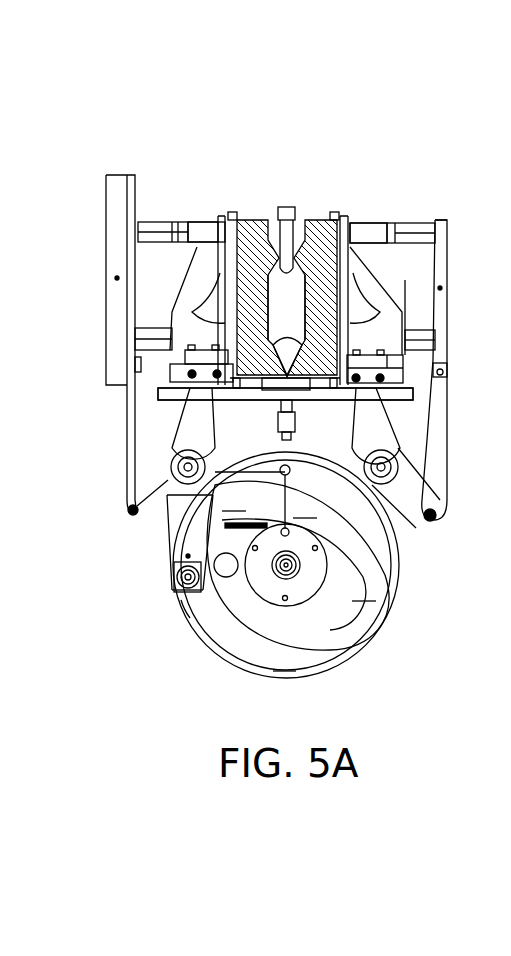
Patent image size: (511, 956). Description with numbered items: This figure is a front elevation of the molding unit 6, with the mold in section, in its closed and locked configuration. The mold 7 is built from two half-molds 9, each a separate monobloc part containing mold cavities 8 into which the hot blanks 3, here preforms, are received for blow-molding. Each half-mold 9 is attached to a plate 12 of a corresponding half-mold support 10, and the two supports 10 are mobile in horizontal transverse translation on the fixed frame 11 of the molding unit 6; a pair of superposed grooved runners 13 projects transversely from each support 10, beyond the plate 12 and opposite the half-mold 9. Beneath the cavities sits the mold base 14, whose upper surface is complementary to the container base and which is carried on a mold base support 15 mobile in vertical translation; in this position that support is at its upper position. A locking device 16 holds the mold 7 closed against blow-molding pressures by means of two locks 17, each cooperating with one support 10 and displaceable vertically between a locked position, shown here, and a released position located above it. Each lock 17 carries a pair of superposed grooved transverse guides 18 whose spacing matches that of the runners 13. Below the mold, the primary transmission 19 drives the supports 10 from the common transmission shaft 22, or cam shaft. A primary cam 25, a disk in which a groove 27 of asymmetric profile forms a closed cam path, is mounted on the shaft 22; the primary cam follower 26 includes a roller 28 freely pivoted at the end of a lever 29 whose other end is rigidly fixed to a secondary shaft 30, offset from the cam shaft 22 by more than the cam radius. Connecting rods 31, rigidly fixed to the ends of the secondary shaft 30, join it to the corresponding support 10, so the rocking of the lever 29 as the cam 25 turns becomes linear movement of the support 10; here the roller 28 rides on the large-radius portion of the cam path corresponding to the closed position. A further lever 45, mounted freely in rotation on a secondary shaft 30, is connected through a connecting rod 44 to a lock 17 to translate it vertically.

The molding unit 6 is at (278, 152).
The blanks 3 is at (285, 205).
The mold 7 is at (297, 257).
The half-molds 9 is at (313, 210).
The mold cavities 8 is at (294, 311).
The half-mold supports 10 is at (217, 220).
The fixed frame 11 is at (158, 405).
The plate 12 is at (197, 308).
The grooved runners 13 is at (203, 232).
The mold base 14 is at (300, 347).
The mold base support 15 is at (270, 393).
The locking device 16 is at (453, 222).
The locks 17 is at (107, 288).
The grooved transverse guides 18 is at (162, 225).
The primary transmission 19 is at (162, 558).
The transmission shaft 22 is at (287, 573).
The primary cam 25 is at (387, 615).
The primary cam follower 26 is at (185, 609).
The groove 27 is at (223, 643).
The roller 28 is at (187, 593).
The lever 29 is at (175, 525).
The secondary shaft 30 is at (187, 465).
The connecting rods 31 is at (177, 423).
The connecting rod 44 is at (127, 450).
The further lever 45 is at (412, 515).